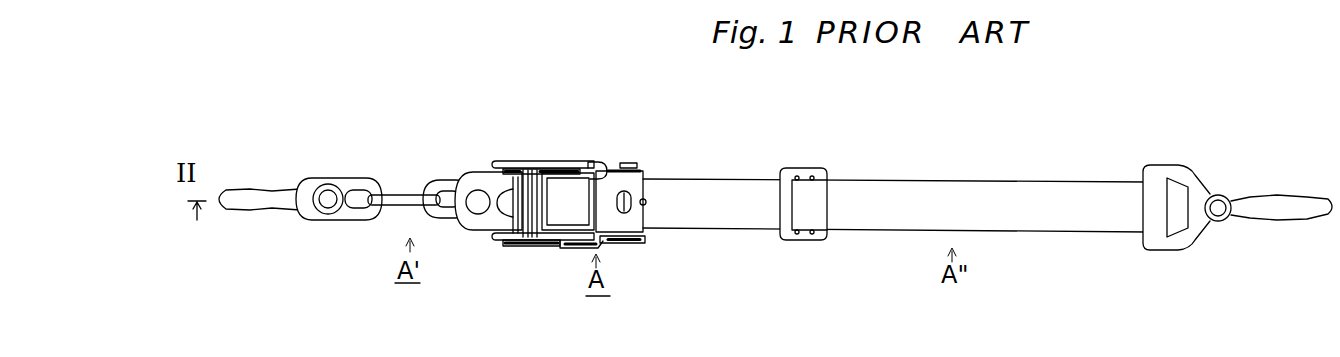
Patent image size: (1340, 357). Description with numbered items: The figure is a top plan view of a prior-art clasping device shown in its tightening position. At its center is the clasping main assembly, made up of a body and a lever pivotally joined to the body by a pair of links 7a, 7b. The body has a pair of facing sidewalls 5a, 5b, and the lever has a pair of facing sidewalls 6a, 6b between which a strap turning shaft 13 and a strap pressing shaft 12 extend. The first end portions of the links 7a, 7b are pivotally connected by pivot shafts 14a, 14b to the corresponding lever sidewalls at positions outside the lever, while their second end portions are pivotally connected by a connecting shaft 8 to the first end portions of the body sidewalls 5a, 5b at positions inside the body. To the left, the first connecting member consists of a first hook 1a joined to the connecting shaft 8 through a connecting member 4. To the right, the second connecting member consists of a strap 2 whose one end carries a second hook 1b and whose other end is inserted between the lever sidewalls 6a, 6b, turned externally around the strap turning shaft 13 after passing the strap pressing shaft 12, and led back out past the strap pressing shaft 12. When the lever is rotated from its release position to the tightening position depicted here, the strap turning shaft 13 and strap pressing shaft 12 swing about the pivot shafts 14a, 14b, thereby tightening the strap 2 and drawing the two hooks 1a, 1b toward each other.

The first hook 1a is at (280, 196).
The second hook 1b is at (1279, 197).
The strap 2 is at (917, 224).
The connecting member 4 is at (399, 221).
The sidewall of the body 5a is at (529, 160).
The sidewall of the body 5b is at (532, 243).
The sidewall of the lever 6a is at (565, 173).
The sidewall of the lever 6b is at (561, 248).
The link 7a is at (540, 170).
The link 7b is at (545, 246).
The connecting shaft 8 is at (510, 205).
The strap pressing shaft 12 is at (566, 204).
The strap turning shaft 13 is at (590, 170).
The pivot shaft 14a is at (607, 170).
The pivot shaft 14b is at (605, 245).